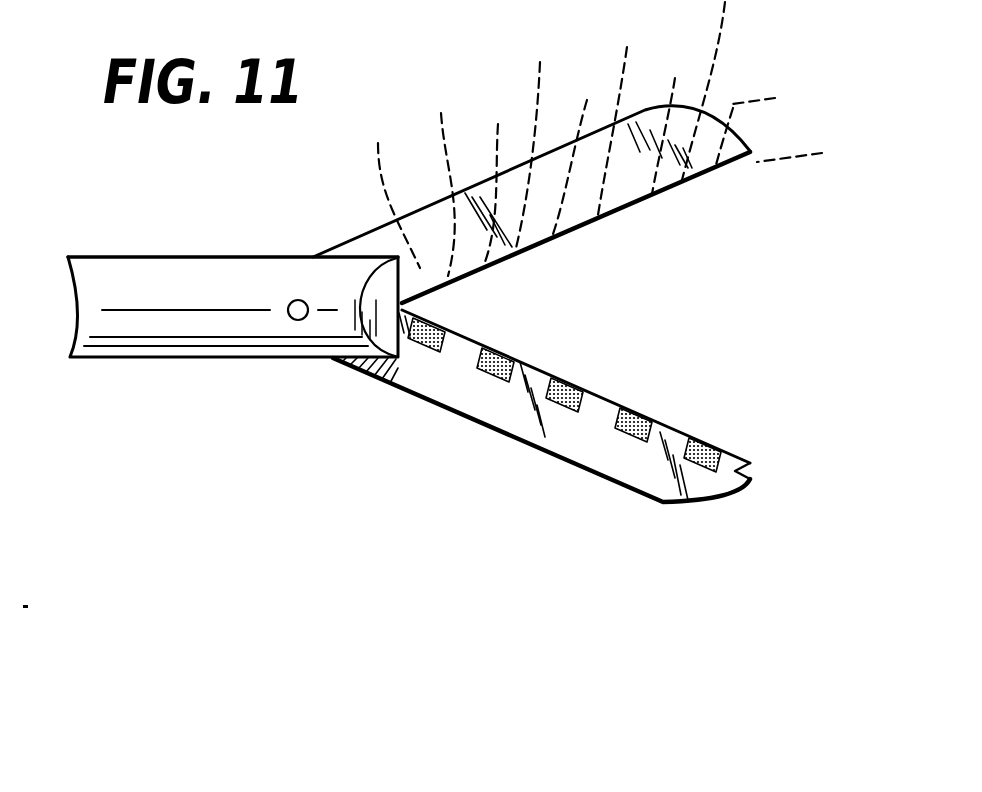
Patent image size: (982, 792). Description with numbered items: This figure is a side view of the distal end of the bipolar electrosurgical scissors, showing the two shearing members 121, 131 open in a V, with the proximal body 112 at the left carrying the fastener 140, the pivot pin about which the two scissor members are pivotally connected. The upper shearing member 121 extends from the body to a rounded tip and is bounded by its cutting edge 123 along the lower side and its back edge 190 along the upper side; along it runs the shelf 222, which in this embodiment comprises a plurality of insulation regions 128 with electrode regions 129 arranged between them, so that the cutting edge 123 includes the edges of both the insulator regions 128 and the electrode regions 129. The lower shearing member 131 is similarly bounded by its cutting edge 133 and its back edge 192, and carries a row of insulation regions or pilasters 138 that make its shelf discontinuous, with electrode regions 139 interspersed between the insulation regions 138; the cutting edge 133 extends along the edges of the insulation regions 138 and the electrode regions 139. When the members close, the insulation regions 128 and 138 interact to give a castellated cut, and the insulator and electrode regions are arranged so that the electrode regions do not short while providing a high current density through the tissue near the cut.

The shaft housing 112 is at (153, 257).
The fastener 140 is at (295, 319).
The back edge 190 is at (385, 226).
The back edge 192 is at (353, 373).
The shearing member 121 is at (697, 110).
The cutting edge 123 is at (718, 167).
The insulation regions 128 is at (646, 139).
The electrode regions 129 is at (589, 159).
The shelf 222 is at (468, 278).
The insulation regions 138 is at (418, 343).
The electrode regions 139 is at (457, 360).
The cutting edge 133 is at (663, 422).
The shearing member 131 is at (750, 479).